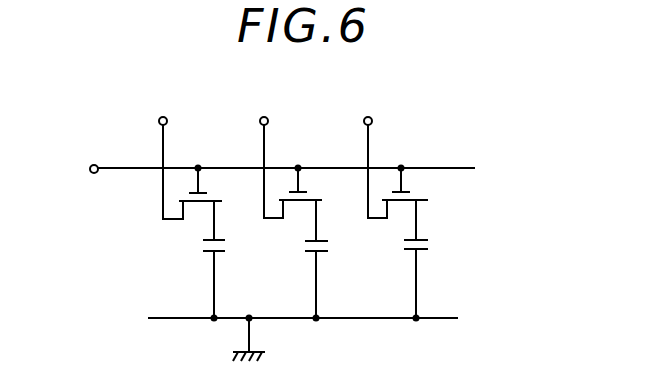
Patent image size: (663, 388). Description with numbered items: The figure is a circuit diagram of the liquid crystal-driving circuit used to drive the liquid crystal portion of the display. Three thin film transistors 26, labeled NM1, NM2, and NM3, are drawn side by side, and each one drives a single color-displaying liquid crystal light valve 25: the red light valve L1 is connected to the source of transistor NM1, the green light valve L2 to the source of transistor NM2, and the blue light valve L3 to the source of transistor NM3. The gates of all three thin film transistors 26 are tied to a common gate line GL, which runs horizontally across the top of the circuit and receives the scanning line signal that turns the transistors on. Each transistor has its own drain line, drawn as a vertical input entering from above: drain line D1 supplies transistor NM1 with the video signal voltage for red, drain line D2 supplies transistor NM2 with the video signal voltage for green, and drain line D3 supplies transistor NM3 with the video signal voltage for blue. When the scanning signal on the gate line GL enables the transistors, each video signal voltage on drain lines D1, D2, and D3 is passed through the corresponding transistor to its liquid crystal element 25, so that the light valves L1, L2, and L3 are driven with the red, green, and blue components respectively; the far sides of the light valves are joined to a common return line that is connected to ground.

The liquid crystal light valve 25 is at (442, 259).
The thin film transistor 26 is at (446, 195).
The common gate line GL is at (265, 169).
The drain line D1 is at (166, 154).
The drain line D2 is at (267, 153).
The drain line D3 is at (370, 153).
The thin film transistor NM1 is at (214, 184).
The thin film transistor NM2 is at (316, 184).
The thin film transistor NM3 is at (418, 184).
The liquid crystal light valve L1 is at (199, 259).
The liquid crystal light valve L2 is at (301, 259).
The liquid crystal light valve L3 is at (400, 259).